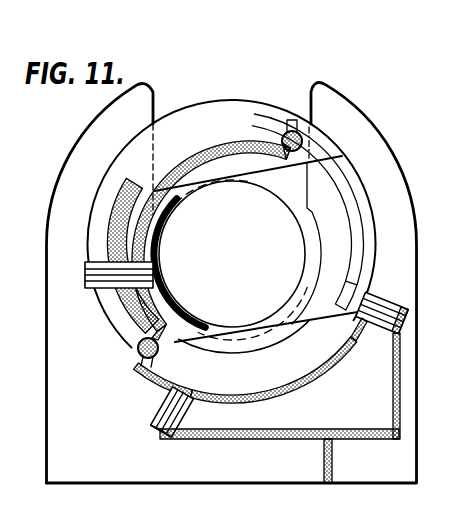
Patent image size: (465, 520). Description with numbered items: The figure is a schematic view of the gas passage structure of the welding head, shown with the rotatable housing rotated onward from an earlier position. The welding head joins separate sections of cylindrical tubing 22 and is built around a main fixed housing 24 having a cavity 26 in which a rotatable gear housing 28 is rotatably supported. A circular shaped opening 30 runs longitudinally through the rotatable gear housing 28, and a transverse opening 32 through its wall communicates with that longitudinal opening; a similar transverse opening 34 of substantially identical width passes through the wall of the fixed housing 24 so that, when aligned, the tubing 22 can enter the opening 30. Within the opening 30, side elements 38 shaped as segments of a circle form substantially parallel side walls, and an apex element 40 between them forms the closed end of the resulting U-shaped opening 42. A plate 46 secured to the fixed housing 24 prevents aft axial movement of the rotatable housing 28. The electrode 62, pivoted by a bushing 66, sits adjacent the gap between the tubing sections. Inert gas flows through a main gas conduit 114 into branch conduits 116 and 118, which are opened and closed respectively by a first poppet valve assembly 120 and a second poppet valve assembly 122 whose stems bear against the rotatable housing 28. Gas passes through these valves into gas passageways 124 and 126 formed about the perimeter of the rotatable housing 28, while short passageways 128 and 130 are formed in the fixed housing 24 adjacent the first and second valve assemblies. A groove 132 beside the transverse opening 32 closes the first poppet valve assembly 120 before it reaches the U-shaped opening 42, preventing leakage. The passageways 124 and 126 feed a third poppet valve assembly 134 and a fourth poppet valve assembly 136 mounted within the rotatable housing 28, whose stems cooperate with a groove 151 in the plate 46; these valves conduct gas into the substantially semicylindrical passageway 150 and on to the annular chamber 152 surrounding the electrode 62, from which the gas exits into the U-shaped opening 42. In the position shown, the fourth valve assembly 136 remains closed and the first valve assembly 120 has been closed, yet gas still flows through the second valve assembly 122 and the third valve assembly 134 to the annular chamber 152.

The cylindrical tubing 22 is at (238, 213).
The main fixed housing 24 is at (188, 476).
The cavity 26 is at (360, 196).
The rotatable gear housing 28 is at (124, 328).
The circular shaped opening 30 is at (221, 148).
The transverse opening 32 is at (322, 308).
The transverse opening 34 is at (309, 100).
The side elements 38 is at (265, 85).
The apex element 40 is at (152, 203).
The U-shaped opening 42 is at (284, 188).
The plate 46 is at (374, 257).
The electrode 62 is at (85, 262).
The bushing 66 is at (88, 283).
The main gas conduit 114 is at (329, 482).
The branch conduit 116 is at (401, 405).
The branch conduit 118 is at (254, 441).
The first poppet valve assembly 120 is at (393, 294).
The second poppet valve assembly 122 is at (158, 413).
The gas passageway 124 is at (275, 398).
The gas passageway 126 is at (196, 118).
The short passageway 128 is at (364, 328).
The short passageway 130 is at (145, 396).
The groove 132 is at (366, 328).
The third poppet valve assembly 134 is at (133, 356).
The fourth poppet valve assembly 136 is at (276, 132).
The semicylindrical passageway 150 is at (153, 177).
The groove 151 is at (350, 222).
The annular chamber 152 is at (155, 253).